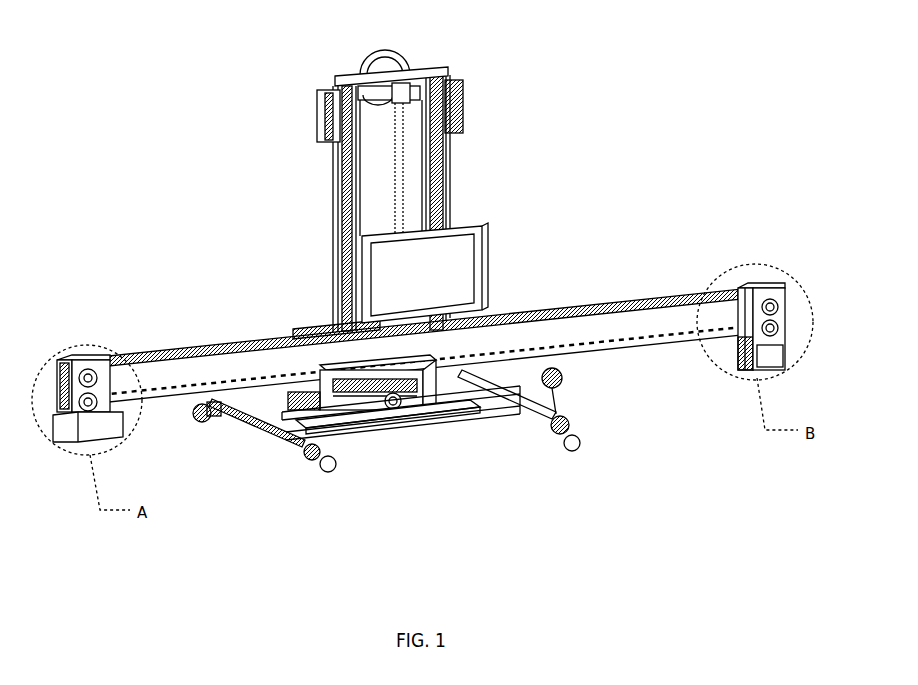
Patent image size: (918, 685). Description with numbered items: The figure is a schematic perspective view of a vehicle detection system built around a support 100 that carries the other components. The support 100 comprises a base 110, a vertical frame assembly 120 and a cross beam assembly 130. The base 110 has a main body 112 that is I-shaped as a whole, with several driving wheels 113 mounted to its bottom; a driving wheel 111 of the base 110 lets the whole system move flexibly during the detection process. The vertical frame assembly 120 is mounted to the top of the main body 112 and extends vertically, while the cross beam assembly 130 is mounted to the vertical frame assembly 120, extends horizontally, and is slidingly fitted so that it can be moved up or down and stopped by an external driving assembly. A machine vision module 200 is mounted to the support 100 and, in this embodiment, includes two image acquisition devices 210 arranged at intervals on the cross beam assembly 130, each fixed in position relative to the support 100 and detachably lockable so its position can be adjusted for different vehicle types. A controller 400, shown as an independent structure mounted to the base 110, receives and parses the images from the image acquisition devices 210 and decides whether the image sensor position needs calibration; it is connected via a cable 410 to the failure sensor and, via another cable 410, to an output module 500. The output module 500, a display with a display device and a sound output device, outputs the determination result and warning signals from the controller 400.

The support 100 is at (347, 308).
The base 110 is at (371, 401).
The driving wheel 111 is at (384, 467).
The main body 112 is at (268, 436).
The driving wheels 113 is at (331, 474).
The vertical frame assembly 120 is at (383, 223).
The cross beam assembly 130 is at (325, 333).
The machine vision module 200 is at (422, 337).
The image acquisition device 210 is at (76, 340).
The controller 400 is at (357, 430).
The cable 410 is at (604, 352).
The output module 500 is at (484, 282).